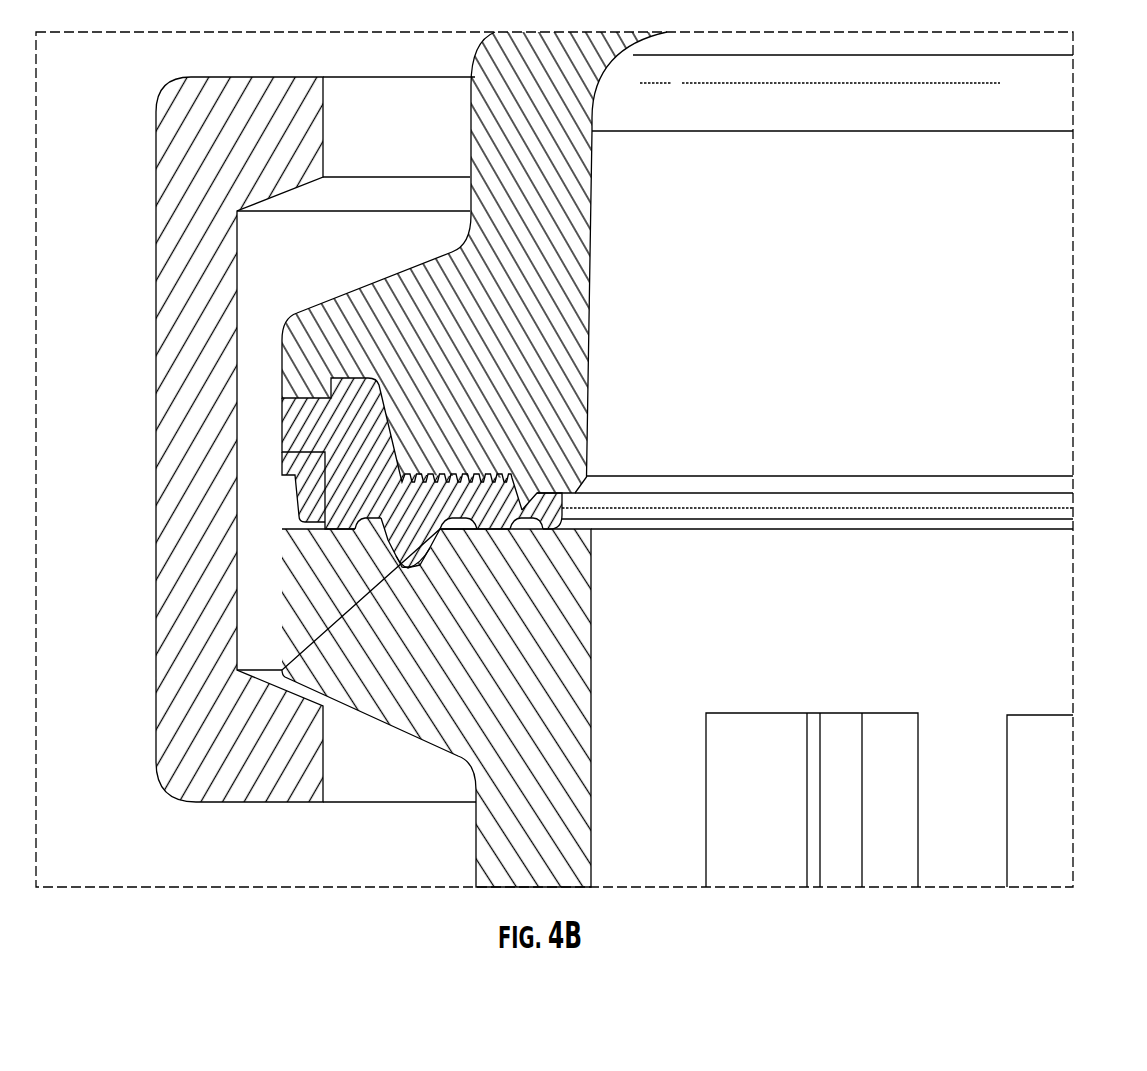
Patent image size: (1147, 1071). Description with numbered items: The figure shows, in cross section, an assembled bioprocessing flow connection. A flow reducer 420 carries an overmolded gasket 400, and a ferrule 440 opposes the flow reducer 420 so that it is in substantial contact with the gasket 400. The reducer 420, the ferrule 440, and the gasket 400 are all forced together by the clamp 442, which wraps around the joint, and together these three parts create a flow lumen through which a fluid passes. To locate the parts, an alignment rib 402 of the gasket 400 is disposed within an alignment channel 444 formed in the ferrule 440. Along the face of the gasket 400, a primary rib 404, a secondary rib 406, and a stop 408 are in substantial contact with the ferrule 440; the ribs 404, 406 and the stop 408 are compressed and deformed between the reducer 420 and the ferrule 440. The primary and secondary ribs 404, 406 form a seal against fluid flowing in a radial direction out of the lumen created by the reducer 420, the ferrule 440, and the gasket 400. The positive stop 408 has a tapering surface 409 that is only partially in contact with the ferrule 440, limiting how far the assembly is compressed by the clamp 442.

The overmolded gasket 400 is at (1045, 522).
The alignment rib 402 is at (395, 568).
The primary rib 404 is at (542, 531).
The secondary rib 406 is at (484, 531).
The stop 408 is at (310, 542).
The tapering surface 409 is at (355, 531).
The flow reducer 420 is at (1045, 328).
The ferrule 440 is at (295, 637).
The clamp 442 is at (155, 135).
The alignment channel 444 is at (408, 570).